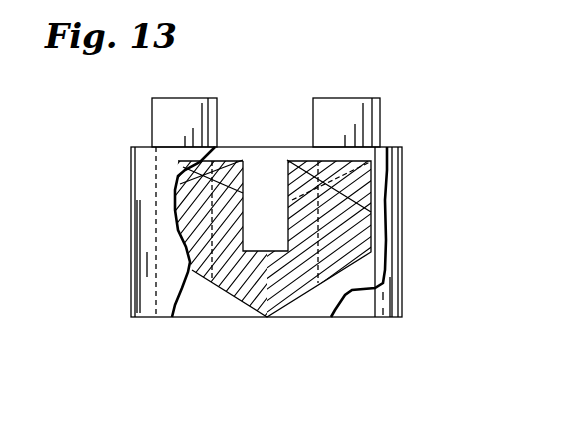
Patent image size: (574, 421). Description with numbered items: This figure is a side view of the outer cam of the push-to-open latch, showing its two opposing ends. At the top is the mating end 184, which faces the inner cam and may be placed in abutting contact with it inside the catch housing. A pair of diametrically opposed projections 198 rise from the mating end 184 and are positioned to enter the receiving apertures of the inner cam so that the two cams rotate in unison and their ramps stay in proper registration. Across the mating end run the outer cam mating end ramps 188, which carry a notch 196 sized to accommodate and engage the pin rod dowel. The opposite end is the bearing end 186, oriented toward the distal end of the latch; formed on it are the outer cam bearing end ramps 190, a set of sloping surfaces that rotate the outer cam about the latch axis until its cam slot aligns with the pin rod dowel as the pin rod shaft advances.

The mating end 184 is at (140, 149).
The bearing end 186 is at (150, 318).
The outer cam mating end ramps 188 is at (178, 167).
The outer cam bearing end ramps 190 is at (238, 298).
The notch 196 is at (272, 252).
The projections 198 is at (178, 98).